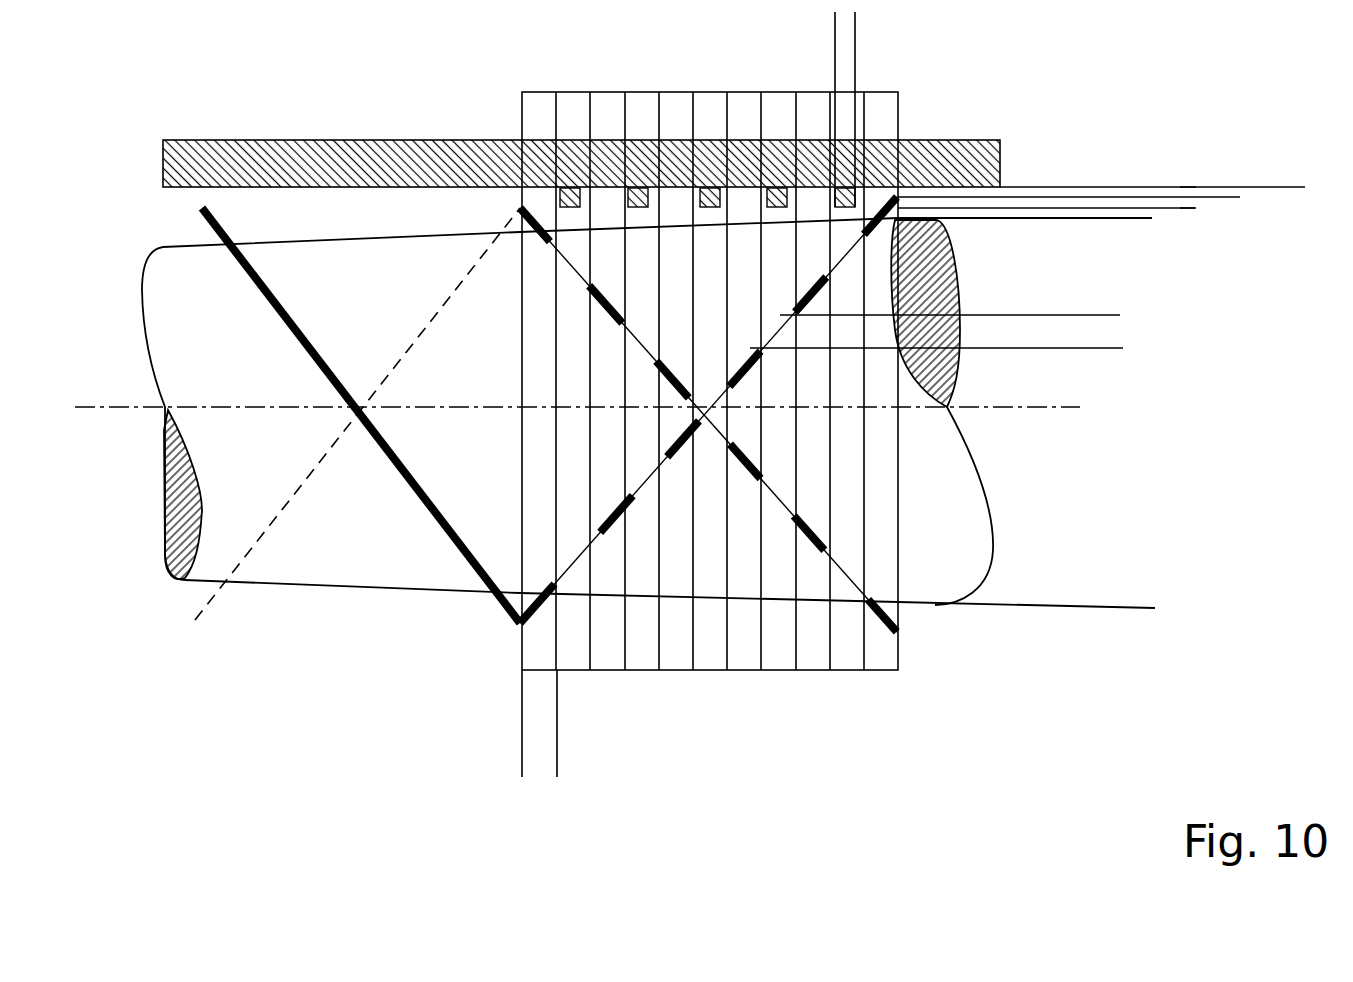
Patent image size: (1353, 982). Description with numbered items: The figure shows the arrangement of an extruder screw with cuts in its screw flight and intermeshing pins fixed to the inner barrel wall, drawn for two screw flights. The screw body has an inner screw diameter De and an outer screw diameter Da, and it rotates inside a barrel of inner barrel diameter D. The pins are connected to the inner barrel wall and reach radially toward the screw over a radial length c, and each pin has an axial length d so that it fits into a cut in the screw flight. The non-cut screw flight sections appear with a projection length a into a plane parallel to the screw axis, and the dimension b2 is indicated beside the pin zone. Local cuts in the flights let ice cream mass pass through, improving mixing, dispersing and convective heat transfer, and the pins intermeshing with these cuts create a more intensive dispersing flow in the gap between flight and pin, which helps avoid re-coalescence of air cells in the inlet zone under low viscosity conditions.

The axial length of intermeshing pins d is at (800, 25).
The radial length of intermeshing pins c is at (1188, 242).
The contact zone width b2 is at (1083, 385).
The inner screw diameter De is at (1138, 218).
The outer screw diameter Da is at (1225, 197).
The inner barrel diameter D is at (1300, 187).
The projection length of screw flight section a is at (472, 762).